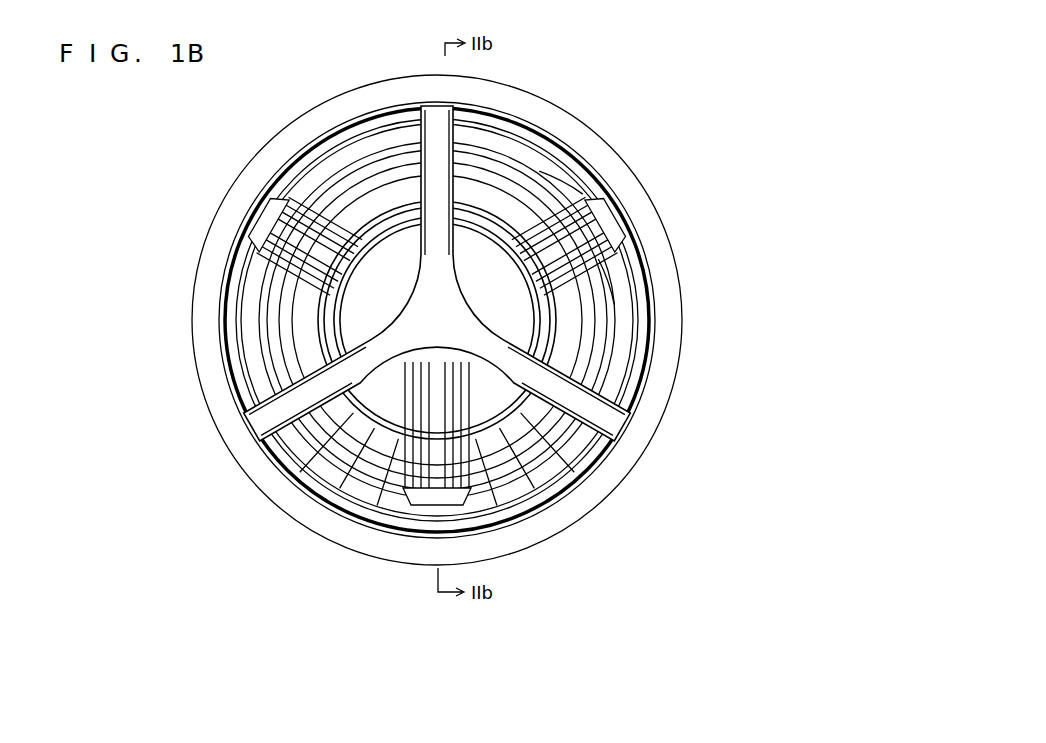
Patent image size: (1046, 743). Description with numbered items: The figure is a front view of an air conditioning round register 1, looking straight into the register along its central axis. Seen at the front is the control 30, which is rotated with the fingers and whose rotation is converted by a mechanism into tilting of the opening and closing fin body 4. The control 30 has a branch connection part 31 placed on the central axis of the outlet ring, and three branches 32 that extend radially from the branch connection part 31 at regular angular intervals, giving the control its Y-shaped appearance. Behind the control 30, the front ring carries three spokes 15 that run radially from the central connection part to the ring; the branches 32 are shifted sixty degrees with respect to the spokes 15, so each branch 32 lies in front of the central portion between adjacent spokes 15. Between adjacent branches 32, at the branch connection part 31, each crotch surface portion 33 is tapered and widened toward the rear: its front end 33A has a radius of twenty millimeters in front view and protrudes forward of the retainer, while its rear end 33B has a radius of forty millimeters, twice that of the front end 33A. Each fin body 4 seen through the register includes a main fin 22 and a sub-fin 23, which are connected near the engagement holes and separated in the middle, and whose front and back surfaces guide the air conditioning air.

The air conditioning round register 1 is at (297, 92).
The opening and closing fin body 4 is at (382, 34).
The spoke 15 is at (302, 240).
The main fin 22 is at (398, 233).
The sub-fin 23 is at (403, 153).
The control 30 is at (410, 251).
The branch connection part 31 is at (303, 397).
The branch 32 is at (438, 160).
The crotch surface portion 33 is at (480, 316).
The front end of crotch surface portion 33A is at (567, 200).
The rear end of crotch surface portion 33B is at (607, 267).